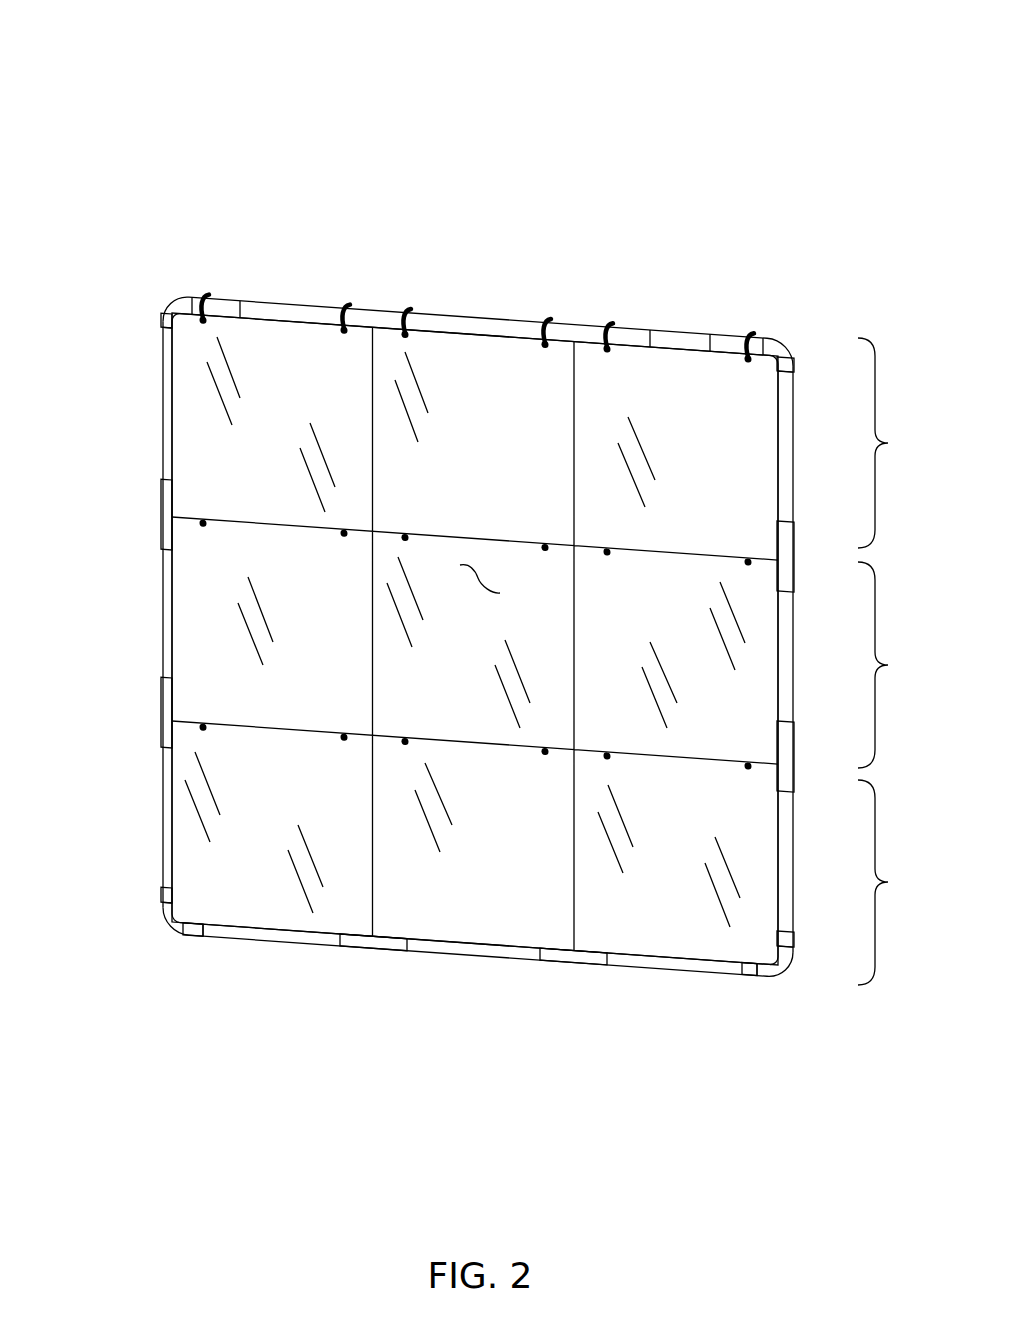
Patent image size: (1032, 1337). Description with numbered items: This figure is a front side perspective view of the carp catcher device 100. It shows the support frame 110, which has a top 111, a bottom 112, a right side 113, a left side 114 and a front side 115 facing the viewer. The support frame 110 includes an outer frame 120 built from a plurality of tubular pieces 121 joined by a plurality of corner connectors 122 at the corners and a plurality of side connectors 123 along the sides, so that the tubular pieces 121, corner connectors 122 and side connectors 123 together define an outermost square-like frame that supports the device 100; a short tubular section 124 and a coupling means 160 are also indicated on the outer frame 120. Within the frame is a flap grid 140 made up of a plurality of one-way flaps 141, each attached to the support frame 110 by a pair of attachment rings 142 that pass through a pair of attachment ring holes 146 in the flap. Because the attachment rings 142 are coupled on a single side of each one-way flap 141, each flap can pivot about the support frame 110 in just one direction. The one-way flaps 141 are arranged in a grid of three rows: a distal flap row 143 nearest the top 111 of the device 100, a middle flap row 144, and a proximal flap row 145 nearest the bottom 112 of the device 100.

The carp catcher device 100 is at (92, 175).
The support frame 110 is at (678, 323).
The top 111 is at (518, 310).
The bottom 112 is at (636, 977).
The right side 113 is at (798, 656).
The left side 114 is at (153, 489).
The front side 115 is at (480, 580).
The outer frame 120 is at (800, 453).
The tubular piece 121 is at (440, 328).
The corner connector 122 is at (165, 321).
The side connector 123 is at (371, 316).
The short tube segment 124 is at (224, 307).
The flap grid 140 is at (203, 632).
The one-way flap 141 is at (481, 355).
The attachment ring 142 is at (348, 298).
The distal flap row 143 is at (898, 443).
The middle flap row 144 is at (898, 665).
The proximal flap row 145 is at (898, 882).
The attachment ring holes 146 is at (343, 332).
The coupling means 160 is at (272, 303).